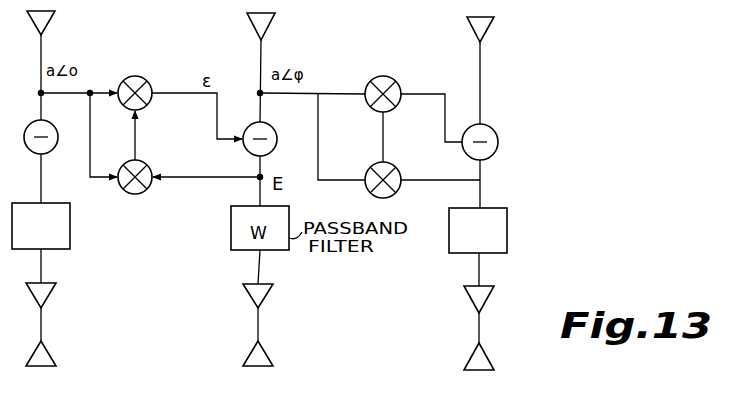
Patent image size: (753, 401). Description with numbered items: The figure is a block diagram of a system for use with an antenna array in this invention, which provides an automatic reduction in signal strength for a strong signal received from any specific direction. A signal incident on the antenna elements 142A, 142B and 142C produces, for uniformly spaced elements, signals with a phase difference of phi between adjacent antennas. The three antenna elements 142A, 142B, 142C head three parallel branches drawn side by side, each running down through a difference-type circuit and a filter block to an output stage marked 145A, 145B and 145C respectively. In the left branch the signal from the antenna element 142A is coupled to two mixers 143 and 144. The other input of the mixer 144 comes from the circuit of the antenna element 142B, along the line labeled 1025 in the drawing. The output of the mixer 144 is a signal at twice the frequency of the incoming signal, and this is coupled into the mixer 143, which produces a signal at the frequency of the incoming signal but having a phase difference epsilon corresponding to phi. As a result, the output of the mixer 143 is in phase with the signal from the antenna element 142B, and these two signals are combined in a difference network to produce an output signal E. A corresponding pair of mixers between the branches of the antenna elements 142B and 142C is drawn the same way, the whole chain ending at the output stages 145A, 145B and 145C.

The antenna element 142A is at (52, 16).
The antenna element 142B is at (270, 18).
The antenna element 142C is at (491, 21).
The mixer 143 is at (141, 76).
The mixer 144 is at (141, 193).
The output amplifier 145A is at (51, 356).
The output amplifier 145B is at (268, 354).
The output amplifier 145C is at (489, 358).
The feedback signal line 1025 is at (206, 164).